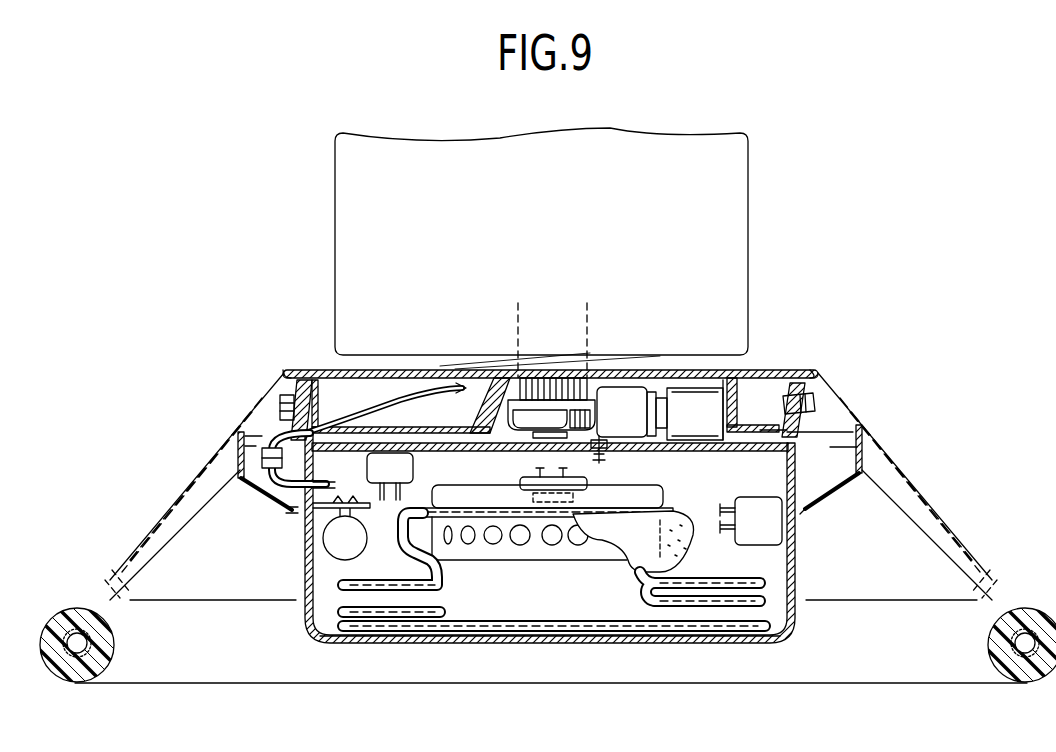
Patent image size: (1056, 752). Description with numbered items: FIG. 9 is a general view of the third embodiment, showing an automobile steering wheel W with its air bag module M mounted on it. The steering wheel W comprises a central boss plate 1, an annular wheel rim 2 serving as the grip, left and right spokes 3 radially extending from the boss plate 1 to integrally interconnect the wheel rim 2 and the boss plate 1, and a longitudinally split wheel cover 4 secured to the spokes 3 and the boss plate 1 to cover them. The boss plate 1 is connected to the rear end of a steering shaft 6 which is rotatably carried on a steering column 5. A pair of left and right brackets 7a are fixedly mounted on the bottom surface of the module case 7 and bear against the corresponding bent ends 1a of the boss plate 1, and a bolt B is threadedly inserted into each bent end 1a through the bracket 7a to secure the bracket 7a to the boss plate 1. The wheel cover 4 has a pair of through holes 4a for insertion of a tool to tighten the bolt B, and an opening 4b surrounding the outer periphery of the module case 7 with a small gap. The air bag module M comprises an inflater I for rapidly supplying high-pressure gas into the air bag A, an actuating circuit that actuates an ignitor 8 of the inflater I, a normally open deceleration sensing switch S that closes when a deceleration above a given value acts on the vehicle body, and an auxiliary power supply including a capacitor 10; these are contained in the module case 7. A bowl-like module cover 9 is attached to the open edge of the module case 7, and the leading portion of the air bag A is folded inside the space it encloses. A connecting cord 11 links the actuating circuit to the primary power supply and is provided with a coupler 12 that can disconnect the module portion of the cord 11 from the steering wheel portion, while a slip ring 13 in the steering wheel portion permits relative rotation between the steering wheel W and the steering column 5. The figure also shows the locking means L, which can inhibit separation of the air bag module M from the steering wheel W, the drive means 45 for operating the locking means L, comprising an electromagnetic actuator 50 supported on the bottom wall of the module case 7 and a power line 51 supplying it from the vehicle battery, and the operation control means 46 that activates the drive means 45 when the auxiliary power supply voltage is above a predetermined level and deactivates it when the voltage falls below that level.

The steering column 5 is at (557, 250).
The steering shaft 6 is at (589, 316).
The slip ring 13 is at (671, 370).
The wheel cover 4 is at (180, 534).
The spokes 3 is at (173, 506).
The wheel rim 2 is at (72, 674).
The steering wheel W is at (534, 686).
The air bag module M is at (283, 586).
The through holes 4a is at (275, 390).
The opening 4b is at (803, 512).
The module case 7 is at (804, 477).
The module cover 9 is at (305, 620).
The boss plate 1 is at (450, 423).
The bent ends 1a is at (302, 377).
The brackets 7a is at (288, 371).
The bolt B is at (280, 407).
The connecting cord 11 is at (352, 405).
The coupler 12 is at (285, 479).
The electromagnetic actuator 50 is at (624, 426).
The drive means 45 is at (643, 445).
The power line 51 is at (602, 452).
The locking means L is at (727, 433).
The operation control means 46 is at (391, 481).
The capacitor 10 is at (349, 550).
The ignitor 8 is at (522, 488).
The inflater I is at (516, 577).
The air bag A is at (648, 596).
The deceleration sensing switch S is at (764, 533).